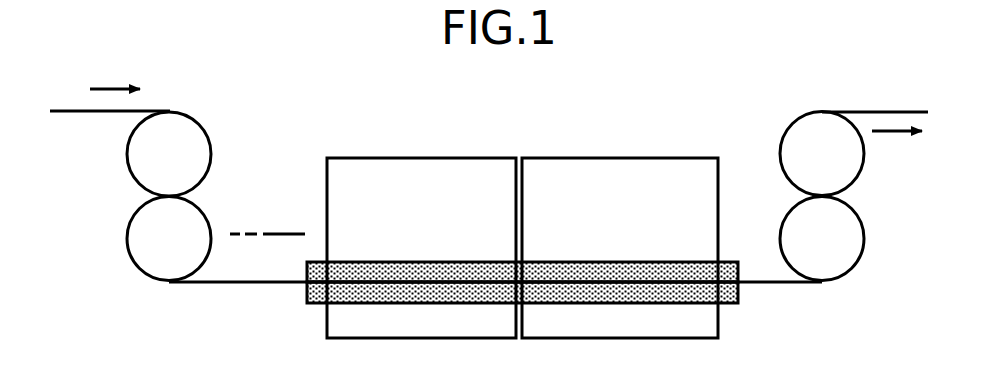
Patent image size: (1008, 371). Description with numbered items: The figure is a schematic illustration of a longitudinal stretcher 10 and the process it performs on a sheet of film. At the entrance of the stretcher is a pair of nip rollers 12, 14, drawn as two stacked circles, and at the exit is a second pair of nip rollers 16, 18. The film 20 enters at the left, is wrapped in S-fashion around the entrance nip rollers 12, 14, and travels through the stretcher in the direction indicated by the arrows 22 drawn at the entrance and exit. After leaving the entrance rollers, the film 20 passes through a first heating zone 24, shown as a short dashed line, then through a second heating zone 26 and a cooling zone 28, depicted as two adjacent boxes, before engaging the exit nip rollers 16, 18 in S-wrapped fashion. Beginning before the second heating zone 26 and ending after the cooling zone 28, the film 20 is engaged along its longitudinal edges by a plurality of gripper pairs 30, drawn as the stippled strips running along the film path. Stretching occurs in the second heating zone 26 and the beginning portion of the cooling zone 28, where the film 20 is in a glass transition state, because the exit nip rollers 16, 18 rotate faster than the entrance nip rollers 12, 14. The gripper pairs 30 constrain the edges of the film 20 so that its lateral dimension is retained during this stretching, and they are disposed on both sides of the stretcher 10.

The longitudinal stretcher 10 is at (557, 131).
The nip roller 12 is at (183, 169).
The nip roller 14 is at (183, 261).
The nip roller 16 is at (836, 170).
The nip roller 18 is at (836, 261).
The film 20 is at (118, 113).
The arrows 22 is at (118, 85).
The first heating zone 24 is at (282, 233).
The second heating zone 26 is at (436, 223).
The cooling zone 28 is at (631, 223).
The gripper pairs 30 is at (317, 305).